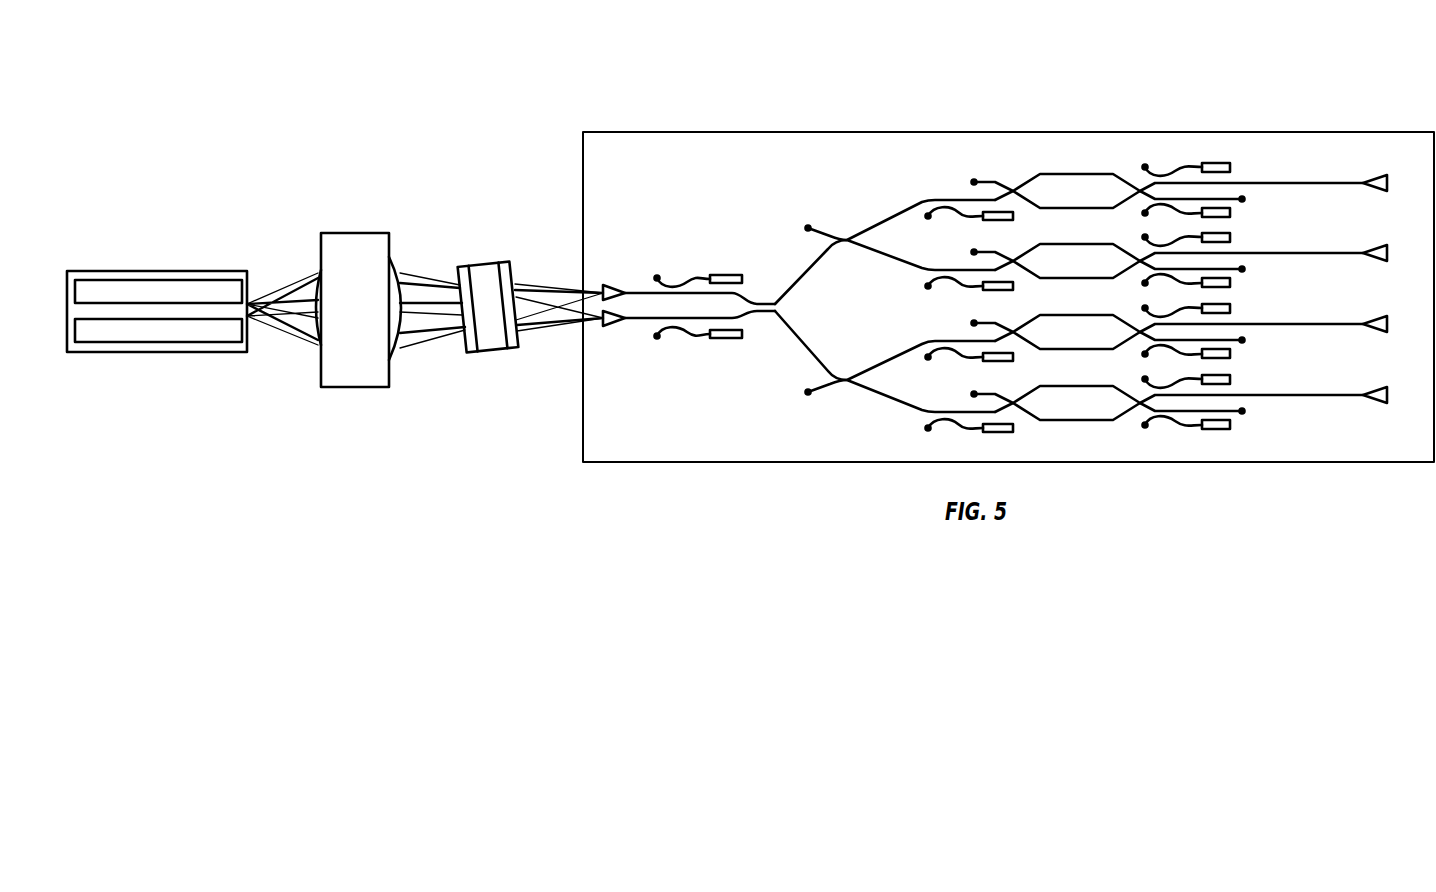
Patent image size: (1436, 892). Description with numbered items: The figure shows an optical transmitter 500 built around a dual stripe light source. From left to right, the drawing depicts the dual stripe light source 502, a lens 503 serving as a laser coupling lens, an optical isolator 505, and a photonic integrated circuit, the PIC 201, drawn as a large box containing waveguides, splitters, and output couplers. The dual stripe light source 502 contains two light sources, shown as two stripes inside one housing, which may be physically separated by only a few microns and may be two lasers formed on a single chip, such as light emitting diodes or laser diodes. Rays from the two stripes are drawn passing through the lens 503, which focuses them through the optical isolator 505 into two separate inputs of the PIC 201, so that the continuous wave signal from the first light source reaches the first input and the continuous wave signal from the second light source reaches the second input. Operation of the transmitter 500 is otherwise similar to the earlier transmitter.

The optical transmitter 500 is at (1373, 61).
The PIC 201 is at (1386, 132).
The dual stripe light source 502 is at (120, 270).
The lens 503 is at (358, 233).
The optical isolator 505 is at (484, 268).